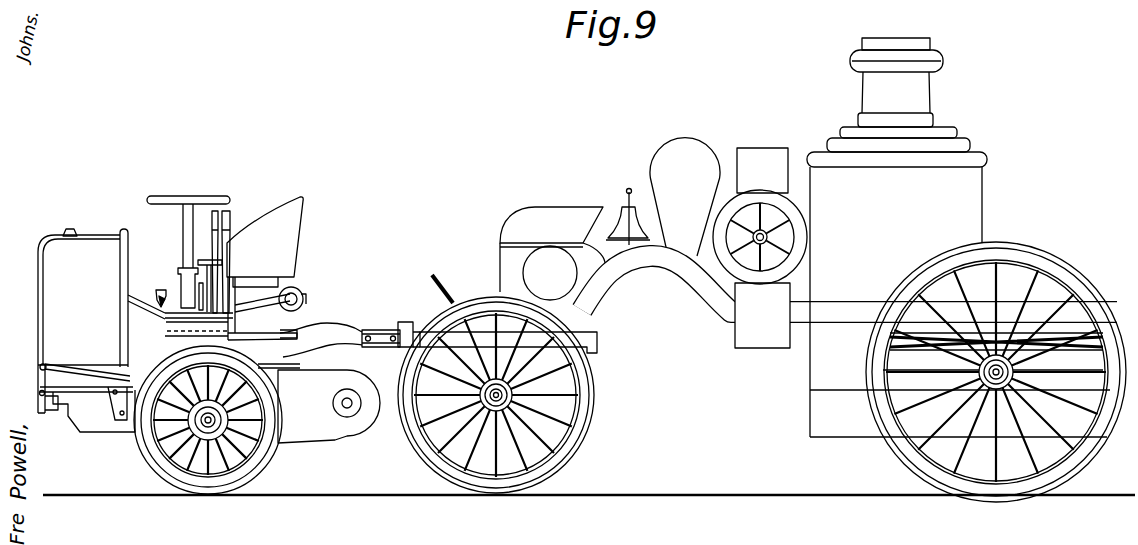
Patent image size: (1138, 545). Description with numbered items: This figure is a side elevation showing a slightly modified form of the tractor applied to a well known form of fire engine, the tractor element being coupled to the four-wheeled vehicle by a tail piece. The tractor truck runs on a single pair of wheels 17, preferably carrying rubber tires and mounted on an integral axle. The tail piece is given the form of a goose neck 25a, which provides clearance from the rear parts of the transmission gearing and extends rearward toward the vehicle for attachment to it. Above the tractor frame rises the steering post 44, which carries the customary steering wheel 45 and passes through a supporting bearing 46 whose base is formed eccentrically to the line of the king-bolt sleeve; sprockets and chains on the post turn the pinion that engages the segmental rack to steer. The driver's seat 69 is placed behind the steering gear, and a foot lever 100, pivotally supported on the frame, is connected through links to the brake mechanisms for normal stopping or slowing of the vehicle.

The wheels 17 is at (263, 452).
The goose neck 25a is at (333, 326).
The steering post 44 is at (183, 241).
The steering wheel 45 is at (190, 196).
The supporting bearing 46 is at (161, 290).
The driver's seat 69 is at (265, 268).
The foot lever 100 is at (163, 295).